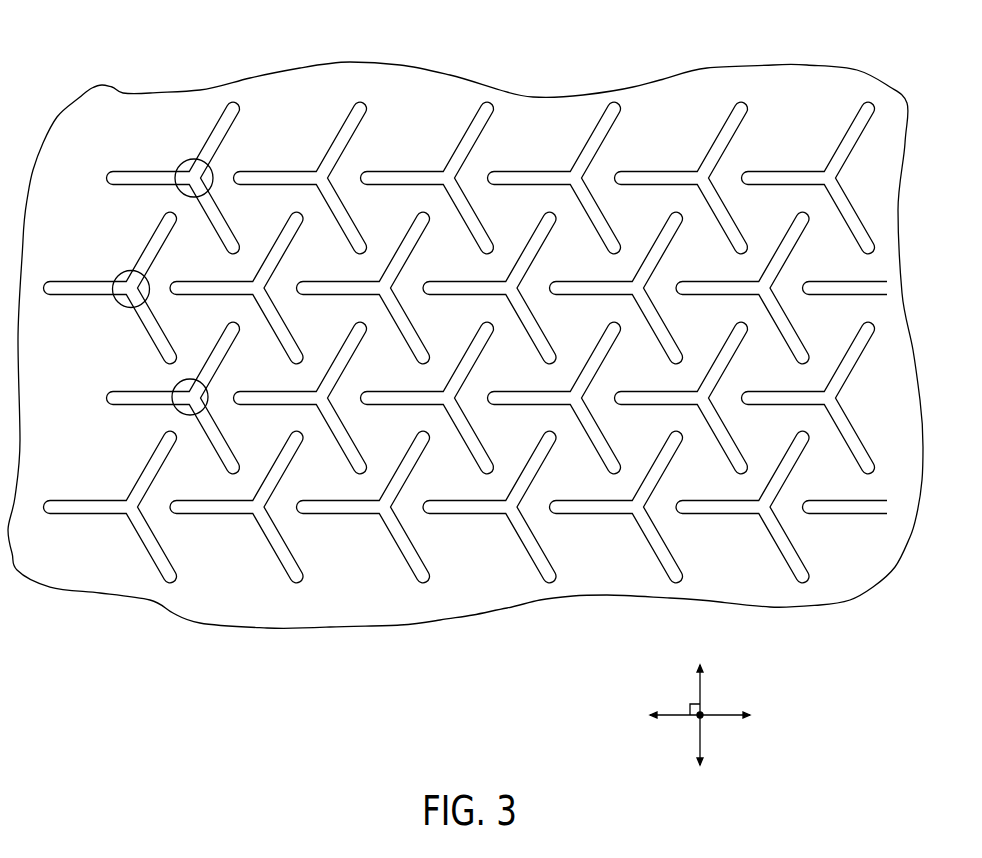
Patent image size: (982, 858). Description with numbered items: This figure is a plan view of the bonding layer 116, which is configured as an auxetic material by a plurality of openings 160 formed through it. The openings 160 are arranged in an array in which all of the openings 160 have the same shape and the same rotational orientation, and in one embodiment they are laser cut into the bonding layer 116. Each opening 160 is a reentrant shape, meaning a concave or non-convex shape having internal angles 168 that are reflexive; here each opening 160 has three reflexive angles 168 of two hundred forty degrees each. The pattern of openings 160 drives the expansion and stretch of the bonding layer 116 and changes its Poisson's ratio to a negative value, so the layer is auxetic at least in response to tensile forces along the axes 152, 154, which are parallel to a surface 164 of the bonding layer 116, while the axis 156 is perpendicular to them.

The bonding layer 116 is at (543, 120).
The openings 160 is at (328, 150).
The surface 164 is at (680, 137).
The internal angles 168 is at (210, 168).
The axis 152 is at (670, 713).
The axis 154 is at (697, 744).
The axis 156 is at (702, 713).